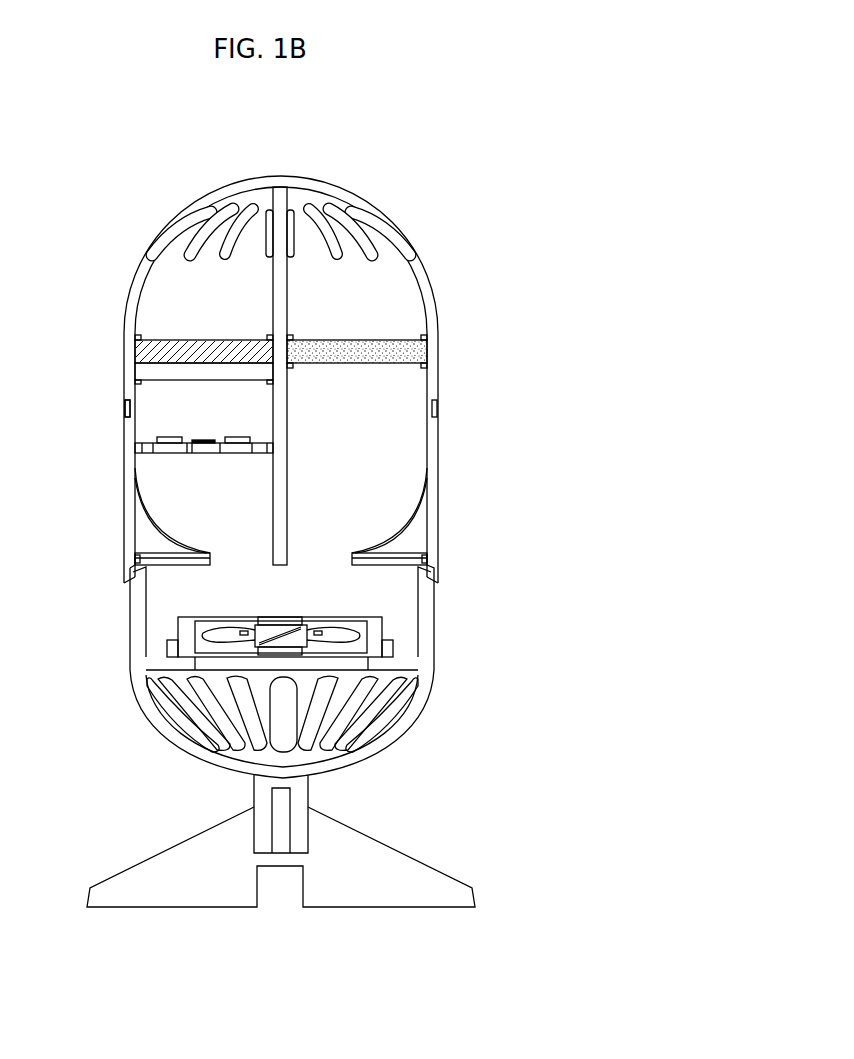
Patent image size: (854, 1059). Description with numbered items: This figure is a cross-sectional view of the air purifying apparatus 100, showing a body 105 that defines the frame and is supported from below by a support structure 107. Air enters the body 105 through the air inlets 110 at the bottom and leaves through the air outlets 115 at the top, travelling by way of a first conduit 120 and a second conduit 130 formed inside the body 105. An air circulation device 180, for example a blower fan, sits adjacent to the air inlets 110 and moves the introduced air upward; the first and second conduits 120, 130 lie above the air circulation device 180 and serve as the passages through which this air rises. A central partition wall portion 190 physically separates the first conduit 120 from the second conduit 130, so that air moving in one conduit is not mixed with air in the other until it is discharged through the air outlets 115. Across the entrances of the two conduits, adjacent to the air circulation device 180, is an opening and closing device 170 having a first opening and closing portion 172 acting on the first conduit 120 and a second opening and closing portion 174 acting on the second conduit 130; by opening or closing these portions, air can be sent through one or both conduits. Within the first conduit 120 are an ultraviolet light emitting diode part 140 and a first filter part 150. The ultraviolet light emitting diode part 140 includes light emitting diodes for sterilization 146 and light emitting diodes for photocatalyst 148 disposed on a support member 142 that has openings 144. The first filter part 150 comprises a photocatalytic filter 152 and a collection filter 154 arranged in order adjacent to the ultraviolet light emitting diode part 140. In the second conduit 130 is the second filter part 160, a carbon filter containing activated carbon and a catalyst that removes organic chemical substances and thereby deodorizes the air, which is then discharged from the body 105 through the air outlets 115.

The air purifying apparatus 100 is at (441, 138).
The body 105 is at (437, 384).
The support structure 107 is at (418, 874).
The air inlets 110 is at (334, 712).
The air outlets 115 is at (368, 238).
The first conduit 120 is at (174, 497).
The second conduit 130 is at (382, 496).
The ultraviolet light emitting diode part 140 is at (65, 392).
The support member 142 is at (178, 451).
The openings 144 is at (141, 447).
The light emitting diodes for sterilization 146 is at (170, 438).
The light emitting diodes for photocatalyst 148 is at (130, 410).
The first filter part 150 is at (67, 330).
The photocatalytic filter 152 is at (150, 373).
The collection filter 154 is at (150, 353).
The second filter part (carbon filter) 160 is at (430, 350).
The opening and closing device 170 is at (70, 608).
The first opening and closing portion 172 is at (185, 559).
The second opening and closing portion 174 is at (357, 560).
The air circulation device 180 is at (362, 627).
The partition wall portion 190 is at (285, 216).